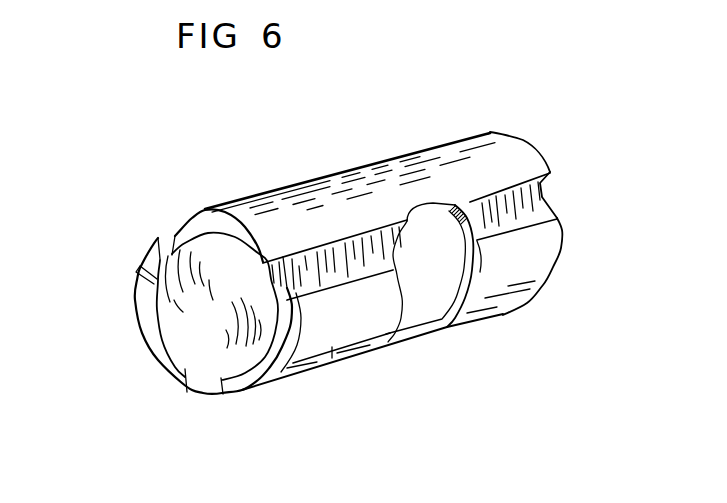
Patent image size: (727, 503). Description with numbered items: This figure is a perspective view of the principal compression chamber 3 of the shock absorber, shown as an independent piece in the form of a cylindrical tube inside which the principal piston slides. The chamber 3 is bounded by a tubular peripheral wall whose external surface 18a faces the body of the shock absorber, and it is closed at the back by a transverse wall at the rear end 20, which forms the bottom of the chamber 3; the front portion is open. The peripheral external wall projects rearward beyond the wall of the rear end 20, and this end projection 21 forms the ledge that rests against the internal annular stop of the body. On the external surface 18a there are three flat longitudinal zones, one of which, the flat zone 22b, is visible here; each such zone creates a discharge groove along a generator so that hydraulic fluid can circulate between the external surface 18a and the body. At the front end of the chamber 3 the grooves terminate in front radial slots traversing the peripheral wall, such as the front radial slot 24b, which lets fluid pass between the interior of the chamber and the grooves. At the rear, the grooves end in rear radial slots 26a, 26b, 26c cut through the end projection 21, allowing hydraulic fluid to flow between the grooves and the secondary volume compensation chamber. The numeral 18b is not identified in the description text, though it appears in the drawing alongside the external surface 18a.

The principal compression chamber 3 is at (452, 112).
The external surface 18a is at (333, 358).
The slit 18b is at (462, 258).
The rear end 20 is at (183, 308).
The end projection 21 is at (158, 353).
The flat longitudinal zone 22b is at (337, 252).
The front radial slot 24b is at (548, 192).
The rear radial slot 26a is at (196, 393).
The rear radial slot 26b is at (279, 290).
The rear radial slot 26c is at (153, 254).